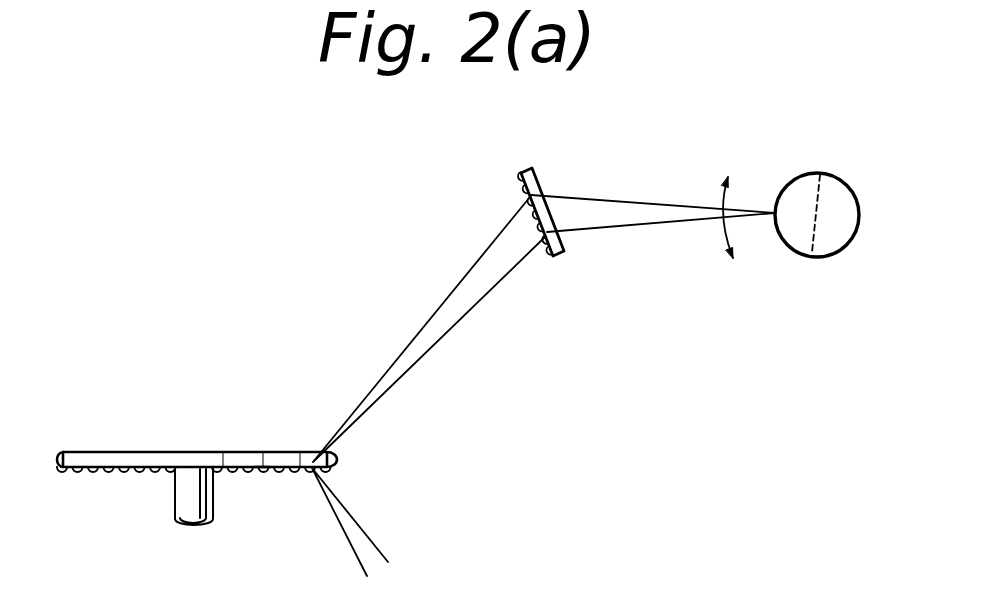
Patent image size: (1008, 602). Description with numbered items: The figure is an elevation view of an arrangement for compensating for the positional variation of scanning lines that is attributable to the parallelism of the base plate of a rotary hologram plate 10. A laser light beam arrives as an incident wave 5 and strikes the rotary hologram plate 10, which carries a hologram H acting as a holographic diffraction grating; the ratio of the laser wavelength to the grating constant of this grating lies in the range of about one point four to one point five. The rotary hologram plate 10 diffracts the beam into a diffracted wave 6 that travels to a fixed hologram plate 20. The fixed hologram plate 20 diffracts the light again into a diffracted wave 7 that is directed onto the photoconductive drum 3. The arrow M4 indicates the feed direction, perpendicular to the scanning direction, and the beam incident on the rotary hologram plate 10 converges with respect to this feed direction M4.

The rotary hologram plate 10 is at (123, 458).
The hologram H is at (262, 475).
The incident wave 5 is at (363, 535).
The diffracted wave 6 is at (470, 293).
The fixed hologram plate 20 is at (552, 257).
The diffracted wave 7 is at (622, 208).
The feed direction arrow M4 is at (713, 198).
The photoconductive drum 3 is at (835, 195).